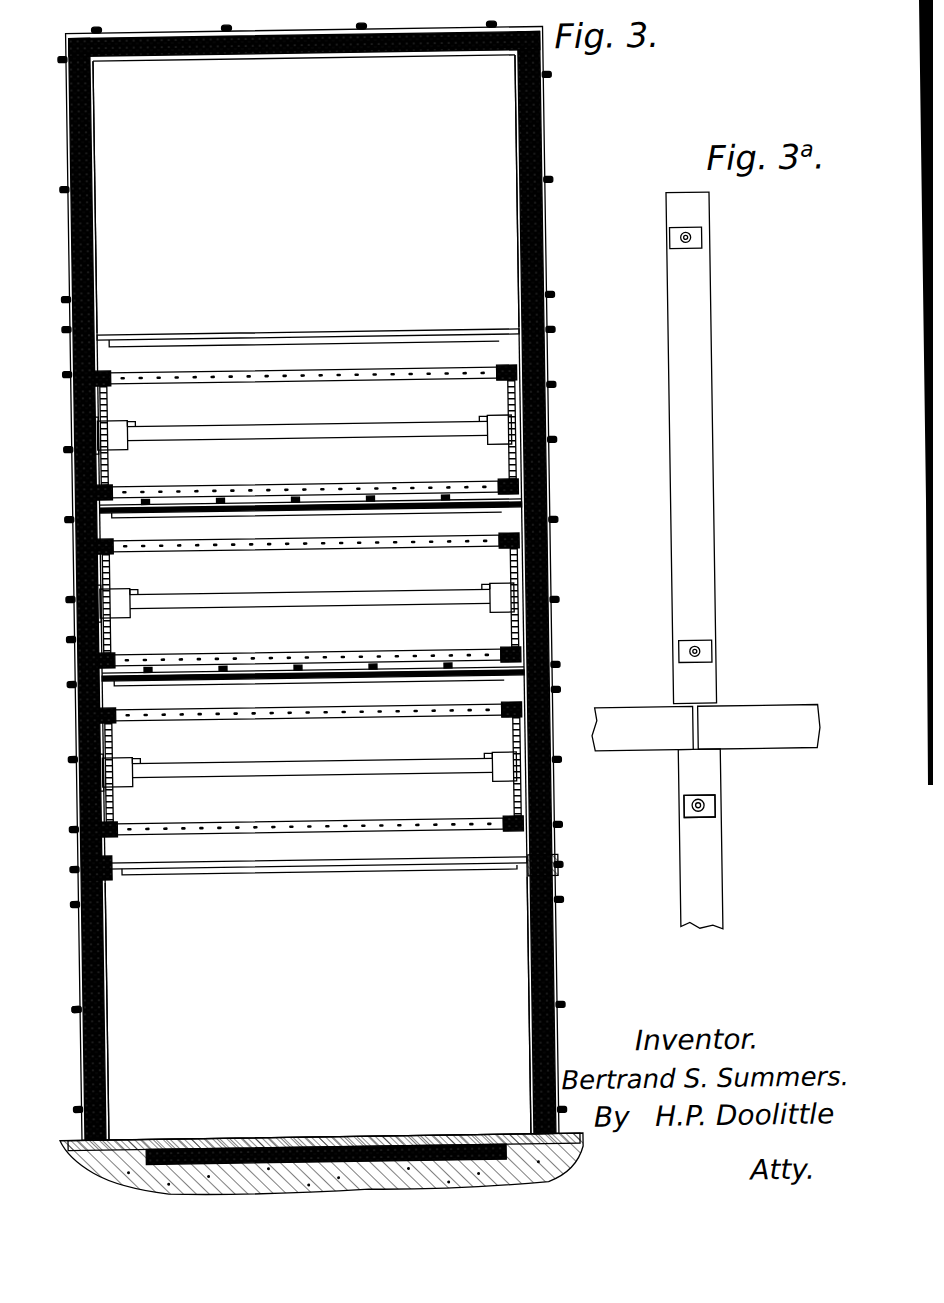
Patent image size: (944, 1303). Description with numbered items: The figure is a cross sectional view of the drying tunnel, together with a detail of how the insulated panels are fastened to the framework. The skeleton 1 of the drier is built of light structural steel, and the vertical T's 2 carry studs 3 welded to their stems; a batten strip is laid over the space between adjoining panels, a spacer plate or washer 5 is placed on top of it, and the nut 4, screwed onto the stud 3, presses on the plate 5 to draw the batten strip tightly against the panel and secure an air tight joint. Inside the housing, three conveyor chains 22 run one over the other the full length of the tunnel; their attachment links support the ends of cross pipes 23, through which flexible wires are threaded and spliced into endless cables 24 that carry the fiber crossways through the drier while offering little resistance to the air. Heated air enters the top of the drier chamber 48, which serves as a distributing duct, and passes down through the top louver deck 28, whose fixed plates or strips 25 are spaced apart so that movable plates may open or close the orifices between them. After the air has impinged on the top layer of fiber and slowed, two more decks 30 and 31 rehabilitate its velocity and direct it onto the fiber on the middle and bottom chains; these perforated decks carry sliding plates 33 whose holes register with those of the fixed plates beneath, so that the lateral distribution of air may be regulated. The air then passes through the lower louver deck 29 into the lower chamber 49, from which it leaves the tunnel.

In FIG. 3, the skeleton of the drier 1 is at (99, 877).
In FIG. 3, the vertical T's 2 is at (100, 1042).
In FIG. 3A, the vertical T's 2 is at (703, 561).
In FIG. 3, the stud 3 is at (548, 876).
In FIG. 3A, the stud 3 is at (701, 811).
In FIG. 3, the nut 4 is at (67, 866).
In FIG. 3A, the nut 4 is at (700, 657).
In FIG. 3A, the spacer plate or washer 5 is at (702, 244).
In FIG. 3, the conveyor chains 22 is at (114, 375).
In FIG. 3, the cross pipes 23 is at (412, 710).
In FIG. 3, the endless cables 24 is at (305, 601).
In FIG. 3, the fixed plates or strips 25 is at (239, 486).
In FIG. 3, the top louver deck 28 is at (425, 336).
In FIG. 3, the lower louver deck 29 is at (409, 872).
In FIG. 3, the deck 30 is at (408, 502).
In FIG. 3, the deck 31 is at (408, 670).
In FIG. 3, the sliding plates 33 is at (235, 503).
In FIG. 3, the top of the drier chamber 48 is at (262, 191).
In FIG. 3, the lower chamber 49 is at (243, 992).